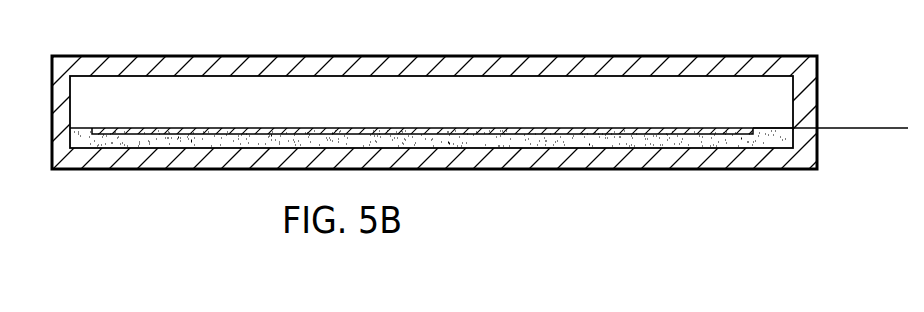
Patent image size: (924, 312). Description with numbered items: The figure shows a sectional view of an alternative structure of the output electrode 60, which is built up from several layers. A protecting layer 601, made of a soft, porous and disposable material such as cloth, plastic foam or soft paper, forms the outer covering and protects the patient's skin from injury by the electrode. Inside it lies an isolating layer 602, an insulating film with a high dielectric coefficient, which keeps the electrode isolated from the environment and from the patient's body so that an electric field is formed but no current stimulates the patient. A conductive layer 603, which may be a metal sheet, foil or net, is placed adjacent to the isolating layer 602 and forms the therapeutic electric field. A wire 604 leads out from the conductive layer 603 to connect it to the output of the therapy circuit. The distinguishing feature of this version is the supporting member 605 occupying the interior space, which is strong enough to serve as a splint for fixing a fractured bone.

The electrode 60 is at (461, 120).
The protecting layer 601 is at (461, 90).
The isolating layer 602 is at (83, 137).
The conductive layer 603 is at (520, 135).
The wire 604 is at (862, 126).
The supporting member 605 is at (572, 100).